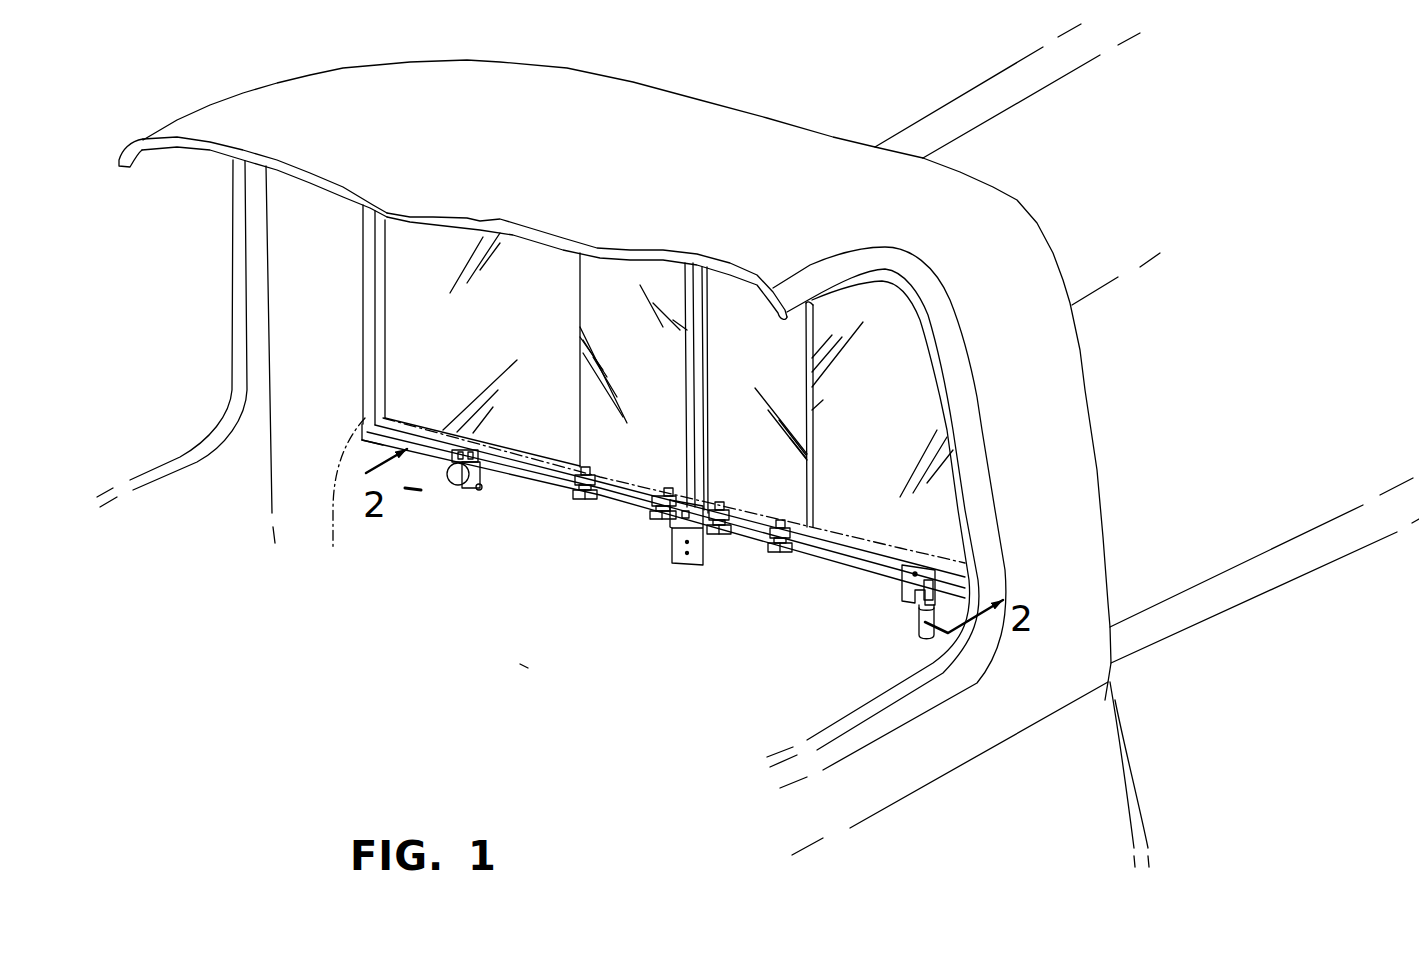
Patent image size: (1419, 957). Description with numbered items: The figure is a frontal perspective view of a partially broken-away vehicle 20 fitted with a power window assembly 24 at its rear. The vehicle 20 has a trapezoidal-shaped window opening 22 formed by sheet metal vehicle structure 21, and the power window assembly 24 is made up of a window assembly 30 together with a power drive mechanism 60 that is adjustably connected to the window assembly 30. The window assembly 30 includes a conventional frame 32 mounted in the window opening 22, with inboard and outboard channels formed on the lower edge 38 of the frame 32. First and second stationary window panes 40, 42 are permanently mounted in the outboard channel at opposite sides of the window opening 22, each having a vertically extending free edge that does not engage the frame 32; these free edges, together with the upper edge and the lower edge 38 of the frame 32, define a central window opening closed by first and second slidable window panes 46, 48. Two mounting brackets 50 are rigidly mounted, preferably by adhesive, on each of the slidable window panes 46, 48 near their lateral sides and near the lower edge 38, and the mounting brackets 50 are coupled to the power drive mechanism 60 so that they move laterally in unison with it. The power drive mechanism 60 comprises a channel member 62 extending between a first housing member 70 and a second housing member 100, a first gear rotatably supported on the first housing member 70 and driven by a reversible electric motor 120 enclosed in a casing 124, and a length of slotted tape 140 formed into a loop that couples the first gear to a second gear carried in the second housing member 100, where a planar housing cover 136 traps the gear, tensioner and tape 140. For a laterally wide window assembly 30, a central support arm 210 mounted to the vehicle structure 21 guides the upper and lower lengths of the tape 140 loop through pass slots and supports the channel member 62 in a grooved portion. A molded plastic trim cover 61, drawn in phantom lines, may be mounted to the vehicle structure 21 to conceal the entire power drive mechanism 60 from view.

The vehicle 20 is at (781, 90).
The vehicle structure 21 is at (368, 440).
The window opening 22 is at (385, 305).
The power window assembly 24 is at (531, 667).
The window assembly 30 is at (899, 411).
The frame 32 is at (367, 350).
The lower edge 38 is at (390, 430).
The first stationary window pane 40 is at (893, 361).
The second stationary window pane 42 is at (422, 250).
The first slidable window pane 46 is at (742, 328).
The second slidable window pane 48 is at (612, 285).
The mounting bracket 50 is at (603, 468).
The power drive mechanism 60 is at (606, 532).
The trim cover 61 is at (333, 527).
The channel member 62 is at (518, 468).
The first housing member 70 is at (911, 584).
The second housing member 100 is at (454, 485).
The electric motor 120 is at (916, 628).
The casing 124 is at (921, 571).
The housing cover 136 is at (476, 482).
The tape 140 is at (807, 565).
The central support arm 210 is at (676, 558).